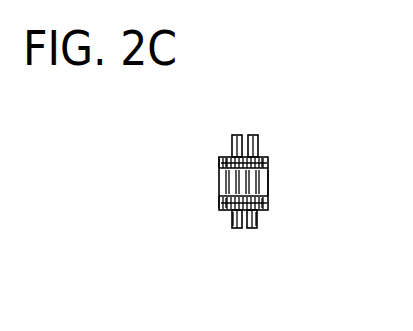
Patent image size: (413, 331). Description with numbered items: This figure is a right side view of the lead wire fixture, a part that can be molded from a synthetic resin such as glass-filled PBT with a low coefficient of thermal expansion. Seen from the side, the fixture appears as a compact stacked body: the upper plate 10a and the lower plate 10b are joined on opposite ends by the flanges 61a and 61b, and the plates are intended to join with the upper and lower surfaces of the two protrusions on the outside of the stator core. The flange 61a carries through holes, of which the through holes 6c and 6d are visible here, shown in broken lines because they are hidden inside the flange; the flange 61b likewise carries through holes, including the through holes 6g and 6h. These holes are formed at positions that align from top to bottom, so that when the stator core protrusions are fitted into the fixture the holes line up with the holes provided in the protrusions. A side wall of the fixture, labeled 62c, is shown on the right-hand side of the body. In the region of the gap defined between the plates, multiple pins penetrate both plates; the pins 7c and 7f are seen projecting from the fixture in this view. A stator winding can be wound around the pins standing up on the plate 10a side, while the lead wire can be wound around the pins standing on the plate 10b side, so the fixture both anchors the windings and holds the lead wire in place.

The plate 10a is at (245, 150).
The plate 10b is at (243, 229).
The flange 61a is at (219, 160).
The flange 61b is at (219, 202).
The side wall 62c is at (268, 183).
The through hole 6c is at (264, 157).
The through hole 6d is at (230, 154).
The through hole 6g is at (266, 211).
The through hole 6h is at (225, 212).
The pin 7c is at (257, 222).
The pin 7f is at (233, 225).